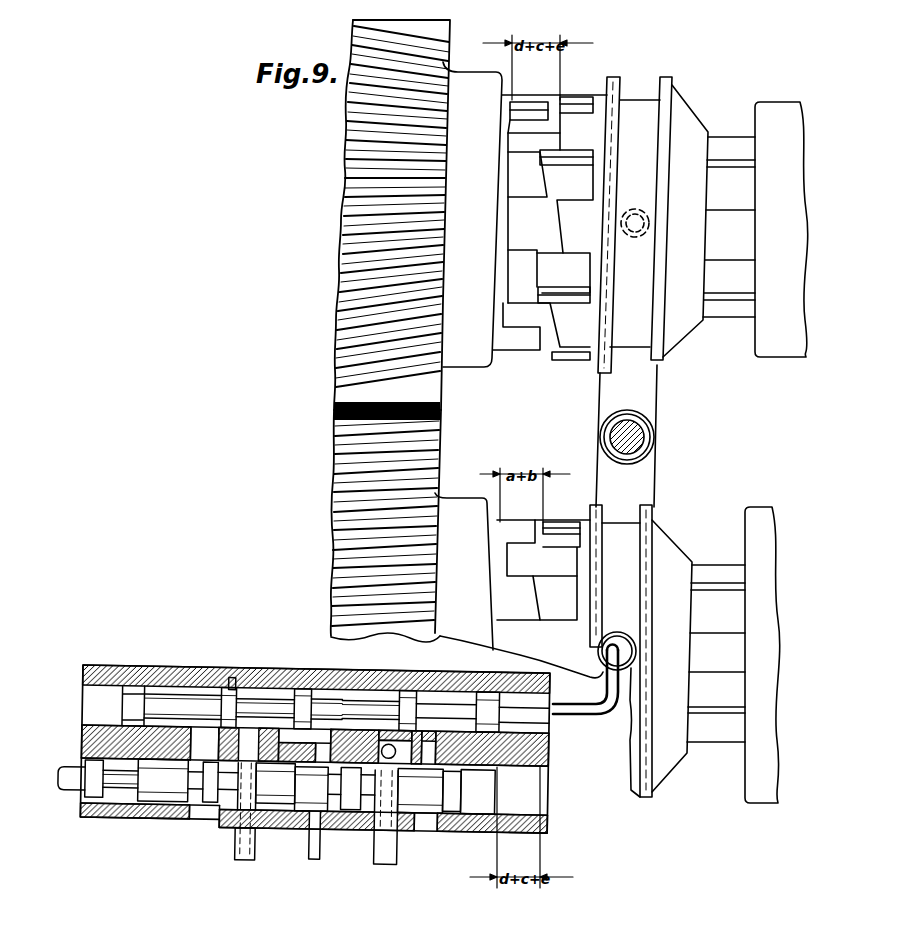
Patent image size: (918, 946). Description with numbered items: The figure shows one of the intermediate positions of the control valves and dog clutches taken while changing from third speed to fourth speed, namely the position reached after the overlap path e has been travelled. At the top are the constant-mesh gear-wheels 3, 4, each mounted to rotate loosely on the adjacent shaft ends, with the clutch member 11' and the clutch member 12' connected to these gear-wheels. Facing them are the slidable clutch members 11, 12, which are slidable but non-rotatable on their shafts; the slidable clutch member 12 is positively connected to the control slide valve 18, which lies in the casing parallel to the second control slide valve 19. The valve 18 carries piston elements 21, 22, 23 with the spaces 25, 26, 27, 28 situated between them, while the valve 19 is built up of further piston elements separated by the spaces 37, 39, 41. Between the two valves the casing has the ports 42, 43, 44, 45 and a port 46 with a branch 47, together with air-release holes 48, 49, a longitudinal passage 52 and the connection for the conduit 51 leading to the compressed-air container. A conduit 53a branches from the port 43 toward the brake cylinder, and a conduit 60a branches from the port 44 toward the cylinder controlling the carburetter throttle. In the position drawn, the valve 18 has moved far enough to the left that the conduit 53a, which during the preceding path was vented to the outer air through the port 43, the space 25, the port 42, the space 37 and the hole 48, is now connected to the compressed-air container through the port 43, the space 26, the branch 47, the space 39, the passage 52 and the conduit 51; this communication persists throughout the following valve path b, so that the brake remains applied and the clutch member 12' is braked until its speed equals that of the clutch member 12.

The gear-wheel 3 is at (370, 263).
The gear-wheel 4 is at (358, 497).
The slidable clutch member 11 is at (672, 286).
The clutch member 11' is at (516, 214).
The slidable clutch member 12 is at (657, 654).
The clutch member 12' is at (519, 585).
The control slide valve 18 is at (598, 716).
The control slide valve 19 is at (92, 793).
The piston element 21 is at (215, 684).
The piston element 22 is at (327, 680).
The piston element 23 is at (426, 686).
The space 25 is at (183, 680).
The space 26 is at (265, 679).
The space 27 is at (371, 680).
The space 28 is at (483, 687).
The space 37 is at (170, 805).
The space 39 is at (297, 824).
The space 41 is at (420, 817).
The port 42 is at (204, 744).
The port 43 is at (239, 665).
The port 44 is at (400, 702).
The port 45 is at (464, 782).
The port 46 is at (322, 701).
The branch 47 is at (299, 685).
The air-release hole 48 is at (214, 806).
The air-release hole 49 is at (438, 804).
The conduit 51 is at (324, 860).
The longitudinal passage 52 is at (264, 812).
The conduit section 53a is at (237, 859).
The conduit section 60a is at (379, 831).